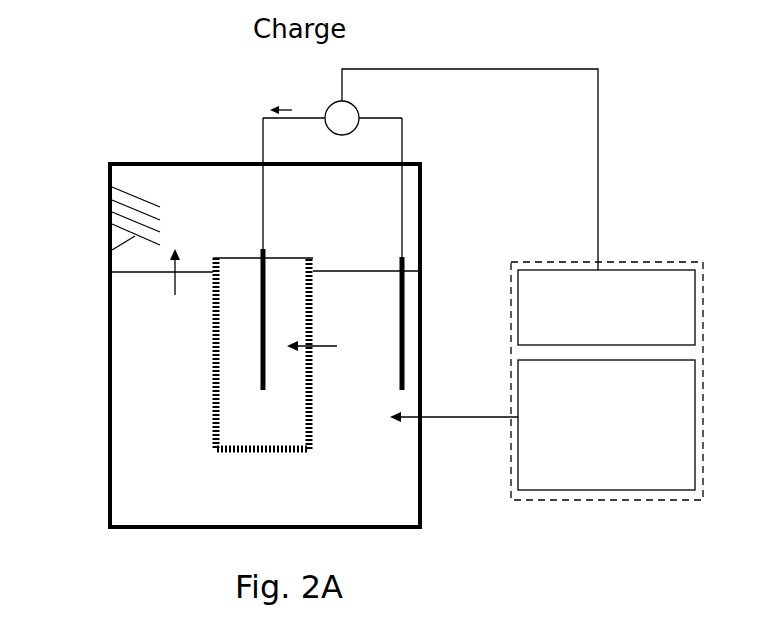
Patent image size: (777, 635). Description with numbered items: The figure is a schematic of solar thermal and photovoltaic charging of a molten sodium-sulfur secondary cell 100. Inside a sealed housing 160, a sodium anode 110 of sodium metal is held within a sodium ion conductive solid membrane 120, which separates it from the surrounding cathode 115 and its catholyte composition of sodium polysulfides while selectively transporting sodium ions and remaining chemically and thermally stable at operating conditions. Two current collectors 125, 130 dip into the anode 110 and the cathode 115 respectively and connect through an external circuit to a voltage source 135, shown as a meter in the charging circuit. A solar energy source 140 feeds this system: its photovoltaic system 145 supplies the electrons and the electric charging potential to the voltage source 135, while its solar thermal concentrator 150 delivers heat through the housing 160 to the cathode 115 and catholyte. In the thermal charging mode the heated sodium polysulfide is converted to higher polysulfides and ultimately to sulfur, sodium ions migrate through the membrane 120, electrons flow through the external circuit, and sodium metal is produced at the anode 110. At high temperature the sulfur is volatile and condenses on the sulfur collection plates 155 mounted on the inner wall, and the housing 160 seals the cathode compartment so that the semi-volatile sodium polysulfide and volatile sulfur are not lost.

The molten sodium battery 100 is at (150, 121).
The sodium anode 110 is at (283, 265).
The cathode 115 is at (182, 453).
The sodium ion conductive solid membrane 120 is at (313, 300).
The current collector 125 is at (262, 285).
The current collector 130 is at (405, 308).
The voltage source 135 is at (354, 108).
The solar energy source 140 is at (643, 262).
The photovoltaic system 145 is at (588, 335).
The solar thermal concentrator 150 is at (588, 482).
The sulfur collection plates 155 is at (112, 250).
The housing 160 is at (422, 500).